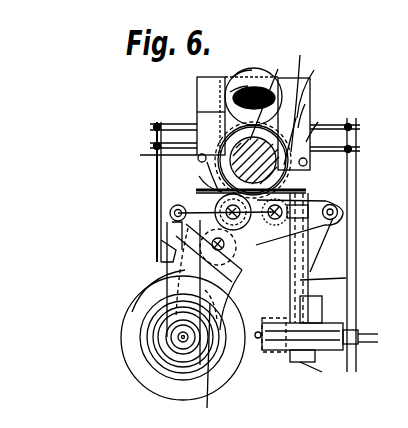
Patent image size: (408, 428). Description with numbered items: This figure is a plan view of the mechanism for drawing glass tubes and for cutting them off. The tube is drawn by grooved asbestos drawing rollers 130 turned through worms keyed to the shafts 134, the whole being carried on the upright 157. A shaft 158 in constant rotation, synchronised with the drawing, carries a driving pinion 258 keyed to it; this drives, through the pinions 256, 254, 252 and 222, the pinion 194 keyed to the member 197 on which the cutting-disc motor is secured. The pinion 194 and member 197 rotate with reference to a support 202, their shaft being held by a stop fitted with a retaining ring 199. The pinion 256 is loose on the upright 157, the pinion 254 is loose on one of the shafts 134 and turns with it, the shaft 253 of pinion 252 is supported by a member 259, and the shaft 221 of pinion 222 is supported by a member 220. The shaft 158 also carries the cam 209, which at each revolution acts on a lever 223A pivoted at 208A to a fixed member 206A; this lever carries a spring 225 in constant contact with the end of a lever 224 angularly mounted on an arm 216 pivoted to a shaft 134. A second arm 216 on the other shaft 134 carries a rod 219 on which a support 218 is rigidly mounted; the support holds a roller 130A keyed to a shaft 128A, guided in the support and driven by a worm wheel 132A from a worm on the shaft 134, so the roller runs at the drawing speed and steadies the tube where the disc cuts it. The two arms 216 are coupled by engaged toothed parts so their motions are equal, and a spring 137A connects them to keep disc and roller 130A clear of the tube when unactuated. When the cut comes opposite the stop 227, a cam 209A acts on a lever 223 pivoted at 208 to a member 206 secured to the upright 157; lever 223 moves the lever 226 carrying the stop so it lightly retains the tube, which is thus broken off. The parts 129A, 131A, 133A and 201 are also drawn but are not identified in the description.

The shaft 128A is at (346, 278).
The slide block 129A is at (317, 258).
The drawing rollers 130 is at (342, 343).
The roller 130A is at (298, 362).
The pin 131A is at (318, 360).
The worm wheel 132A is at (318, 122).
The guide plate 133A is at (305, 104).
The shafts 134 is at (215, 192).
The spring 137A is at (206, 178).
The upright 157 is at (270, 95).
The shaft 158 is at (232, 91).
The pinion 194 is at (158, 353).
The member 197 is at (172, 380).
The retaining ring 199 is at (178, 338).
The wheel flange 201 is at (139, 322).
The support 202 is at (162, 273).
The member 206 is at (318, 128).
The fixed member 206A is at (152, 166).
The pivot 208 is at (307, 165).
The pivot 208A is at (157, 131).
The cam 209 is at (238, 99).
The cam 209A is at (245, 90).
The arm 216 is at (172, 222).
The support 218 is at (310, 270).
The rod 219 is at (170, 213).
The member 220 is at (150, 277).
The shaft 221 is at (208, 324).
The pinion 222 is at (232, 282).
The lever 223 is at (308, 92).
The lever 223A is at (206, 113).
The lever 224 is at (178, 236).
The spring 225 is at (197, 170).
The lever 226 is at (352, 316).
The stop 227 is at (274, 352).
The pinion 252 is at (236, 258).
The shaft 253 is at (265, 225).
The pinion 254 is at (242, 228).
The pinion 256 is at (315, 108).
The driving pinion 258 is at (233, 76).
The member 259 is at (161, 258).